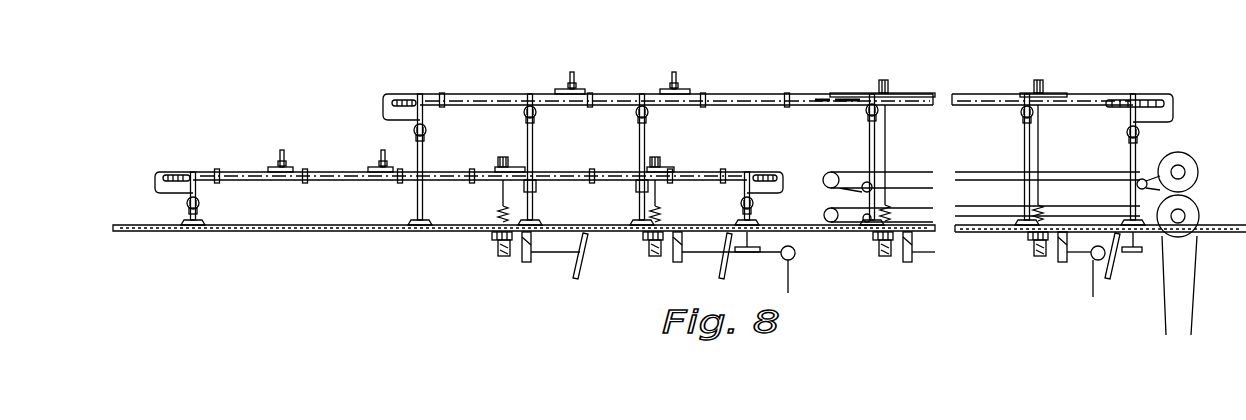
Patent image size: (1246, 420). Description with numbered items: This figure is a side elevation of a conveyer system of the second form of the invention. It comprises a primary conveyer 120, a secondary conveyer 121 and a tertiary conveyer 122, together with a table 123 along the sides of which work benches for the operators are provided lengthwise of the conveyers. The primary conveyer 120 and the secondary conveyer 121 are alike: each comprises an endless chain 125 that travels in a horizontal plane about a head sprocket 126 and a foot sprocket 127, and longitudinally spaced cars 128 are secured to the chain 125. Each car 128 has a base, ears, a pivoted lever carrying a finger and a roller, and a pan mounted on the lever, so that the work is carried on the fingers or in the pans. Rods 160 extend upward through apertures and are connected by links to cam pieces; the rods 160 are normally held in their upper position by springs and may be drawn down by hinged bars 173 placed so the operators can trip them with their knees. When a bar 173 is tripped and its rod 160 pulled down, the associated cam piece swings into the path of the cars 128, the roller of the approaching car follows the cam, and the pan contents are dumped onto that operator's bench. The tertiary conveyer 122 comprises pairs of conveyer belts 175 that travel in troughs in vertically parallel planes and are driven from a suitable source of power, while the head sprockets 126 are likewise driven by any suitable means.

The primary conveyer 120 is at (577, 160).
The secondary conveyer 121 is at (592, 98).
The tertiary conveyer 122 is at (1057, 173).
The table 123 is at (617, 229).
The endless chain 125 is at (362, 183).
The head sprocket 126 is at (772, 178).
The foot sprocket 127 is at (203, 175).
The cars 128 is at (289, 166).
The rods 160 is at (509, 195).
The hinged bars 173 is at (580, 280).
The conveyer belts 175 is at (960, 172).